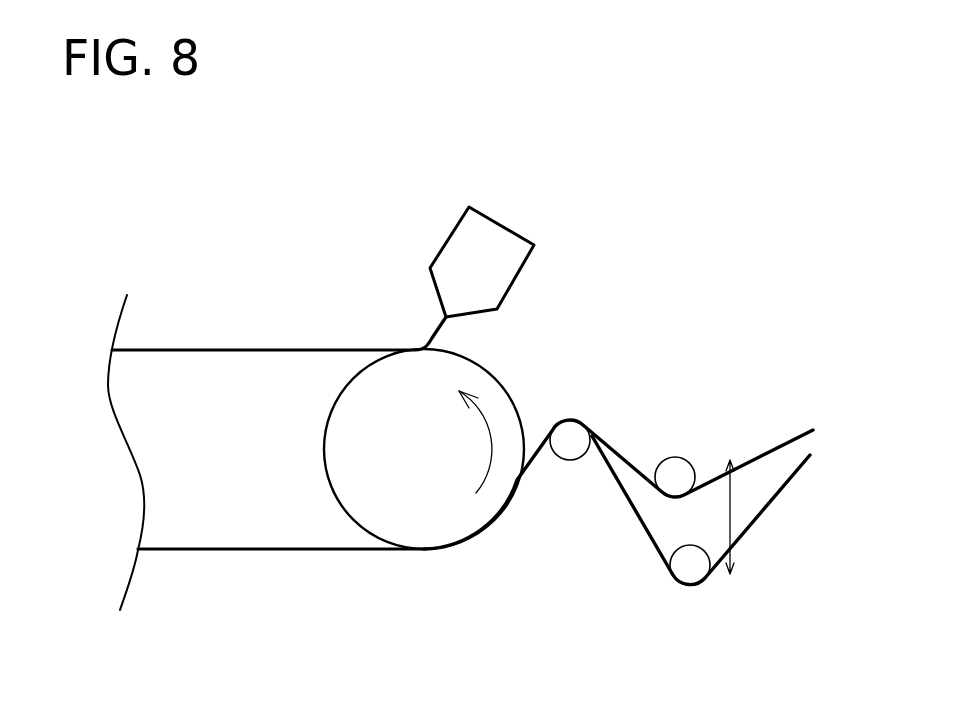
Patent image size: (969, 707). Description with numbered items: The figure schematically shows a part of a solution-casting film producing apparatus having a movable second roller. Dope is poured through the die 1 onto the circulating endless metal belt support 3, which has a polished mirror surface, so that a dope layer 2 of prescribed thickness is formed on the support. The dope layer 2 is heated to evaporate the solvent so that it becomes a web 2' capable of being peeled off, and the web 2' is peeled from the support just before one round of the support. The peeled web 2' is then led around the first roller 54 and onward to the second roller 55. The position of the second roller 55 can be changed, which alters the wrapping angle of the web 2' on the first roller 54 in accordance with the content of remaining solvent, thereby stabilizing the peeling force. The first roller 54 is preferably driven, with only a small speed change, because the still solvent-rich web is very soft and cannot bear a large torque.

The die 1 is at (493, 240).
The dope layer 2 is at (277, 423).
The web 2' is at (618, 505).
The metal belt support 3 is at (492, 372).
The first roller 54 is at (570, 453).
The second roller 55 is at (673, 467).